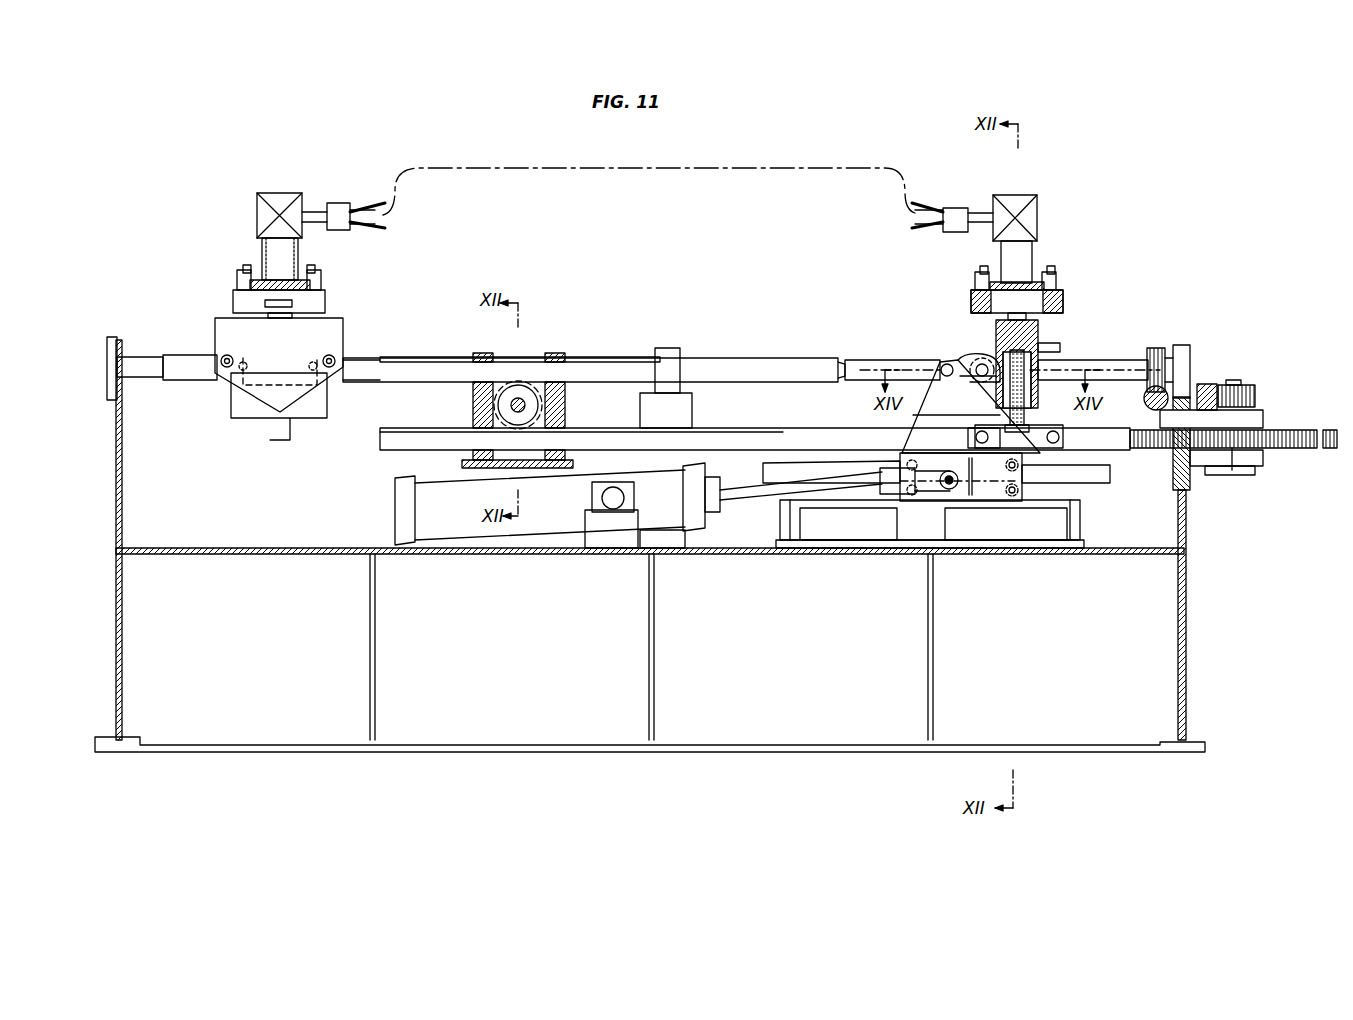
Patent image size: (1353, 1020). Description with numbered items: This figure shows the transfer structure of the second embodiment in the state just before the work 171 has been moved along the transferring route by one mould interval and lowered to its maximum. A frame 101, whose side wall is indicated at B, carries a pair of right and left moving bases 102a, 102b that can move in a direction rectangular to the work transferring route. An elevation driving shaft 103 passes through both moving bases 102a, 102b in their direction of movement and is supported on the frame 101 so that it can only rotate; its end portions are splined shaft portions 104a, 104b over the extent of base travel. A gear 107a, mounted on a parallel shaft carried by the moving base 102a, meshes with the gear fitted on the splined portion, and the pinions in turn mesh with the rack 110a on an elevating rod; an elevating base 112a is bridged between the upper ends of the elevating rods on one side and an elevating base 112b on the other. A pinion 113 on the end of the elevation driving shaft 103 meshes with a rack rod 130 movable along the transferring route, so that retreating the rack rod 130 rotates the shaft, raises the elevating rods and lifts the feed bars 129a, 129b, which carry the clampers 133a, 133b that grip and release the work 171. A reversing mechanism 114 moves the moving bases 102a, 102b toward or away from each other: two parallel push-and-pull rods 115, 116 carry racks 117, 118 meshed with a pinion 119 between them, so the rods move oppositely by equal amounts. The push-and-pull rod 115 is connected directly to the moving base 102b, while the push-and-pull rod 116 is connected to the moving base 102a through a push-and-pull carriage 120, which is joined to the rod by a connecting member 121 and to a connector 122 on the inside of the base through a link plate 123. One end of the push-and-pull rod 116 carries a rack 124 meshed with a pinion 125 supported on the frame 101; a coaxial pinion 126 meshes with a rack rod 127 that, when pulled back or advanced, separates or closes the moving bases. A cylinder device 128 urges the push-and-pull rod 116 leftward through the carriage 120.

The frame 101 is at (1187, 670).
The frame side wall B is at (1190, 577).
The moving base 102a is at (1040, 345).
The moving base 102b is at (344, 342).
The elevation driving shaft 103 is at (710, 368).
The splined shaft portion 104a is at (860, 360).
The splined shaft portion 104b is at (170, 356).
The gear 107a is at (1036, 385).
The rack 110a is at (1062, 432).
The elevating base 112a is at (1063, 304).
The elevating base 112b is at (325, 298).
The pinion 113 is at (1160, 346).
The reversing mechanism 114 is at (525, 430).
The push-and-pull rod 115 is at (643, 365).
The push-and-pull rod 116 is at (835, 440).
The rack 117 is at (598, 367).
The rack 118 is at (600, 420).
The pinion 119 is at (515, 425).
The push-and-pull carriage 120 is at (935, 436).
The connecting member 121 is at (1000, 432).
The connector 122 is at (972, 365).
The link plate 123 is at (948, 375).
The rack 124 is at (1290, 446).
The pinion 125 is at (1232, 450).
The pinion 126 is at (1250, 392).
The rack rod 127 is at (1205, 385).
The cylinder device 128 is at (667, 515).
The feed bar 129a is at (1035, 258).
The feed bar 129b is at (262, 255).
The rack rod 130 is at (1146, 402).
The clamper 133a is at (925, 205).
The clamper 133b is at (365, 206).
The work 171 is at (750, 165).